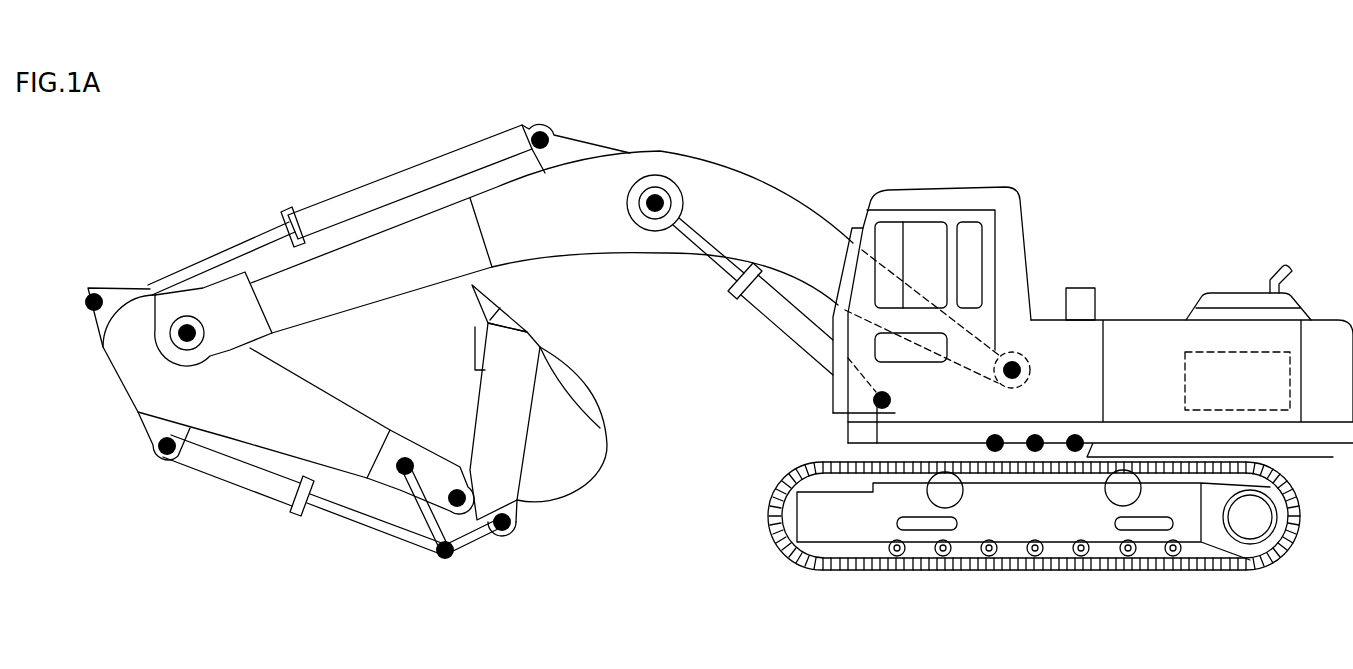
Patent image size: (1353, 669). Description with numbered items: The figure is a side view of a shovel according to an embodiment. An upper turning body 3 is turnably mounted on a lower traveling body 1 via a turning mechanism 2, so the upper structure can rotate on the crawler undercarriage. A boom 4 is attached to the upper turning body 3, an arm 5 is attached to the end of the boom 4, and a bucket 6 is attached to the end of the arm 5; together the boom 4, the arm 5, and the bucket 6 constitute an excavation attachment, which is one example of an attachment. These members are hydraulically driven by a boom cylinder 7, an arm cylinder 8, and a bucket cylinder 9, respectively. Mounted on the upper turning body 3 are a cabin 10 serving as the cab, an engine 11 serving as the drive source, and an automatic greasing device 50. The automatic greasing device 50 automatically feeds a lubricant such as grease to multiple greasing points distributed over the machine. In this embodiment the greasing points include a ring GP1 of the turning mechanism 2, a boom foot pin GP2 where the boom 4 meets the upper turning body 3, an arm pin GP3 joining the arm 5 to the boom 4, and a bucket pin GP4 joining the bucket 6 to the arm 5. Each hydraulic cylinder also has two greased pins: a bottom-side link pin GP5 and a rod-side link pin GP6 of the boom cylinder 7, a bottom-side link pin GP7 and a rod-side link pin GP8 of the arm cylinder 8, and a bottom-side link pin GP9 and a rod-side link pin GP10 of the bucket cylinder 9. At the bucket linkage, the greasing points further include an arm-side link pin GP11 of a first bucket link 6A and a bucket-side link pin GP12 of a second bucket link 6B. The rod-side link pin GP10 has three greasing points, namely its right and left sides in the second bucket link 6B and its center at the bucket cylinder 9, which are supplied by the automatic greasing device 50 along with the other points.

The lower traveling body 1 is at (1302, 520).
The turning mechanism 2 is at (1333, 457).
The upper turning body 3 is at (1152, 320).
The boom 4 is at (710, 170).
The arm 5 is at (148, 383).
The bucket 6 is at (590, 458).
The first bucket link 6A is at (420, 505).
The second bucket link 6B is at (470, 540).
The boom cylinder 7 is at (780, 318).
The arm cylinder 8 is at (395, 188).
The bucket cylinder 9 is at (238, 476).
The cabin 10 is at (955, 188).
The engine 11 is at (1288, 352).
The automatic greasing device 50 is at (1082, 288).
The ring GP1 is at (1075, 452).
The boom foot pin GP2 is at (1014, 362).
The arm pin GP3 is at (187, 328).
The bucket pin GP4 is at (455, 488).
The bottom-side link pin GP5 is at (878, 403).
The rod-side link pin GP6 is at (655, 195).
The bottom-side link pin GP7 is at (540, 130).
The rod-side link pin GP8 is at (94, 298).
The bottom-side link pin GP9 is at (167, 456).
The rod-side link pin GP10 is at (445, 560).
The arm-side link pin GP11 is at (405, 475).
The bucket-side link pin GP12 is at (505, 522).